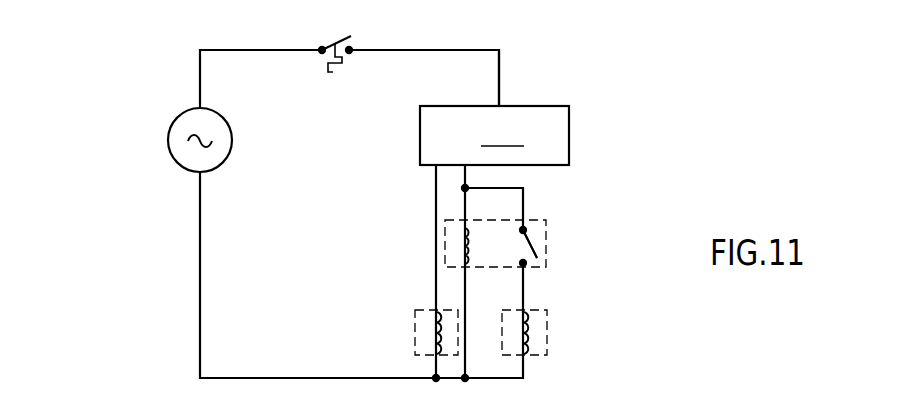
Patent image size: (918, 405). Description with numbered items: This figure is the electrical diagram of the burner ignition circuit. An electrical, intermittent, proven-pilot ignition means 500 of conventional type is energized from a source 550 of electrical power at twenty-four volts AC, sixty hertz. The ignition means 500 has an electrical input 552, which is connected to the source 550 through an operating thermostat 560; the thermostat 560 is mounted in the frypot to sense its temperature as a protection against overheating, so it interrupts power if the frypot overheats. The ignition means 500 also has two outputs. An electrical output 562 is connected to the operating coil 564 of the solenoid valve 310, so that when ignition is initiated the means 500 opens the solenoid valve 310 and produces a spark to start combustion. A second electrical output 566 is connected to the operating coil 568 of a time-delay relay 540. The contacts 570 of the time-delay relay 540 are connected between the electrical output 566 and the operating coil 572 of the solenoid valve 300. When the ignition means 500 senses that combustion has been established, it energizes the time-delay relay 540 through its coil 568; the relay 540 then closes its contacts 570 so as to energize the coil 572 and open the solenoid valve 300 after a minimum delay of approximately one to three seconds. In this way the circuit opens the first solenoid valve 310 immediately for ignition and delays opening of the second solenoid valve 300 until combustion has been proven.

The source of electrical power 550 is at (176, 123).
The operating thermostat 560 is at (344, 80).
The electrical input 552 is at (499, 81).
The ignition means 500 is at (494, 135).
The electrical output 562 is at (436, 196).
The electrical output 566 is at (467, 175).
The time-delay relay 540 is at (546, 222).
The operating coil 568 is at (473, 249).
The contacts 570 is at (512, 250).
The solenoid valve 310 is at (415, 310).
The operating coil 564 is at (436, 330).
The solenoid valve 300 is at (547, 310).
The operating coil 572 is at (547, 330).